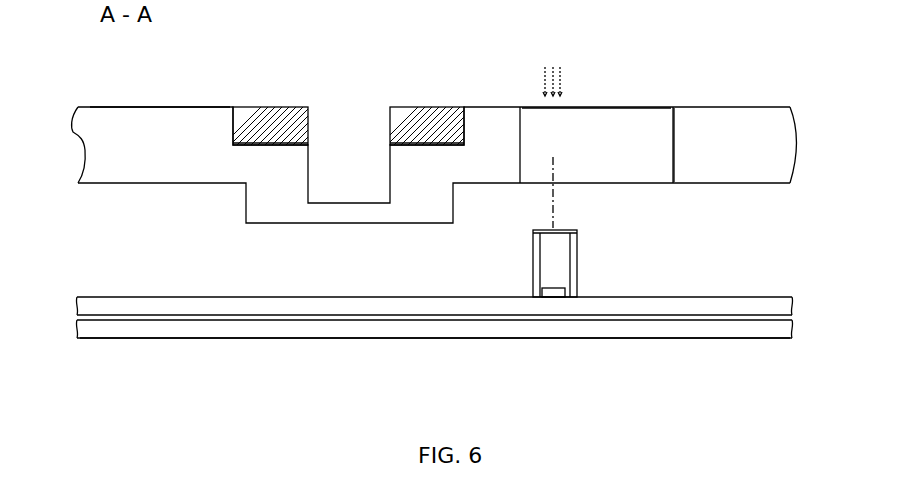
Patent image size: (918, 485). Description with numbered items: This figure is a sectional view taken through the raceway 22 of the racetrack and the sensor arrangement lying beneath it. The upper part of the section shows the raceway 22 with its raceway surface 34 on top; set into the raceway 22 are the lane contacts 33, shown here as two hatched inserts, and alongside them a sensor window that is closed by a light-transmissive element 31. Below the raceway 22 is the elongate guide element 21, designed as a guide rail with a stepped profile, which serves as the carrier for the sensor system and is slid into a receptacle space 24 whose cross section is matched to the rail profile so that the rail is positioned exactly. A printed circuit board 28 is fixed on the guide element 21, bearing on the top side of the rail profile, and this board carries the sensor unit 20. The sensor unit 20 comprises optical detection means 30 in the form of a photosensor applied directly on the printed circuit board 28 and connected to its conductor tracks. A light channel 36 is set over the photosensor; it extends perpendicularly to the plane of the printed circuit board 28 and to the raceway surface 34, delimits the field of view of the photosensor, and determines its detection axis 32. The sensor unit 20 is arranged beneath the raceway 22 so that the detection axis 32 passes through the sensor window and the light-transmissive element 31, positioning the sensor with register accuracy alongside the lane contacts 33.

The sensor unit 20 is at (672, 242).
The guide element 21 is at (448, 332).
The raceway 22 is at (78, 138).
The receptacle space 24 is at (673, 132).
The printed circuit board 28 is at (737, 304).
The optical detection means 30 is at (537, 288).
The light-transmissive element 31 is at (607, 112).
The detection axis 32 is at (553, 204).
The lane contact 33 is at (292, 109).
The raceway surface 34 is at (88, 103).
The light channel 36 is at (578, 254).